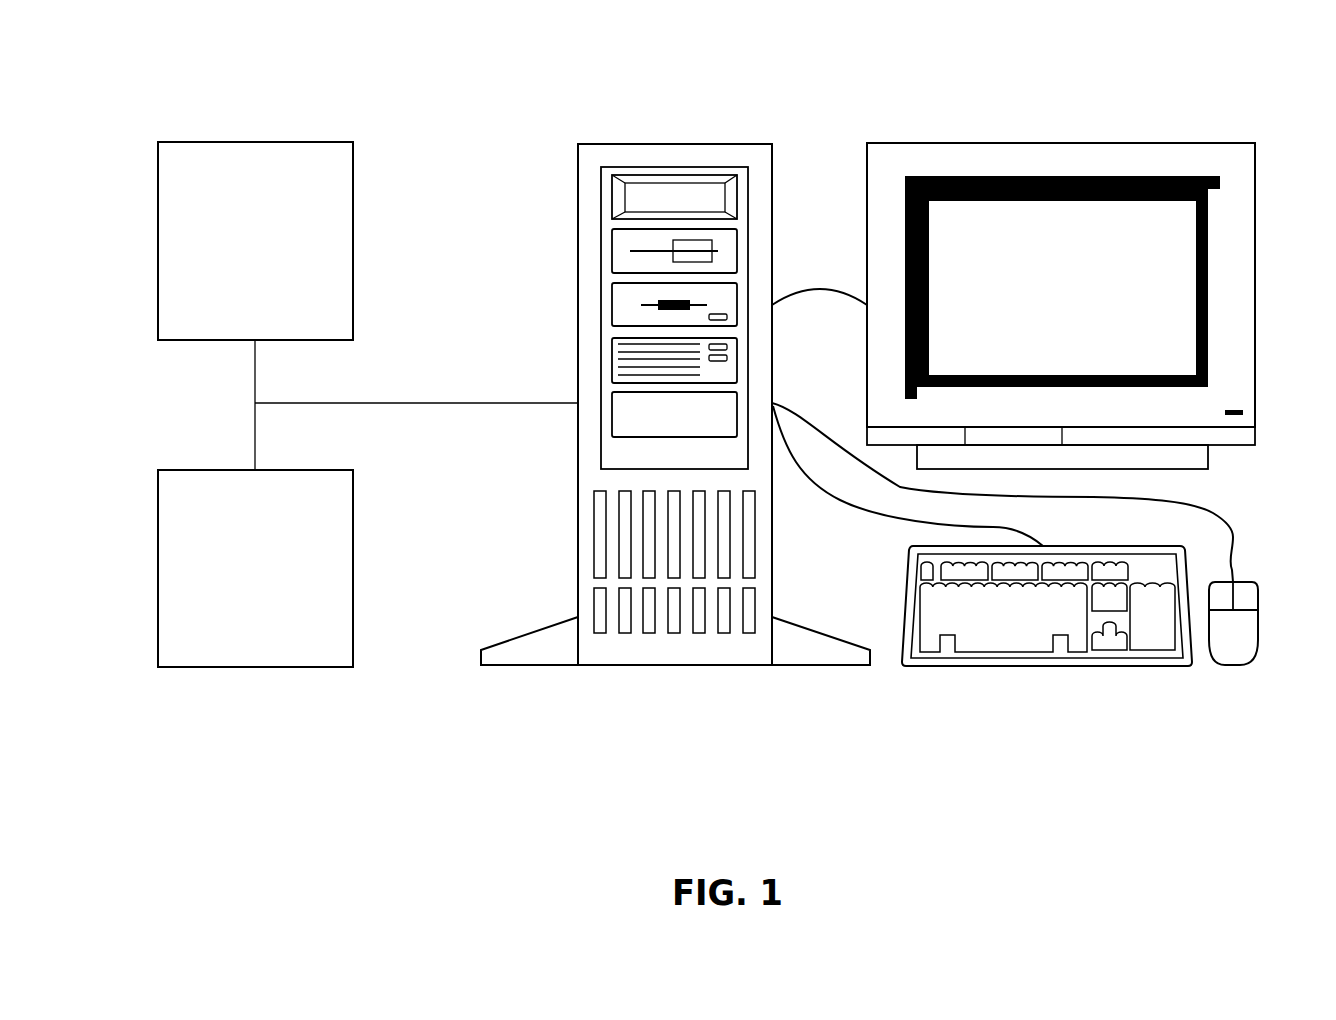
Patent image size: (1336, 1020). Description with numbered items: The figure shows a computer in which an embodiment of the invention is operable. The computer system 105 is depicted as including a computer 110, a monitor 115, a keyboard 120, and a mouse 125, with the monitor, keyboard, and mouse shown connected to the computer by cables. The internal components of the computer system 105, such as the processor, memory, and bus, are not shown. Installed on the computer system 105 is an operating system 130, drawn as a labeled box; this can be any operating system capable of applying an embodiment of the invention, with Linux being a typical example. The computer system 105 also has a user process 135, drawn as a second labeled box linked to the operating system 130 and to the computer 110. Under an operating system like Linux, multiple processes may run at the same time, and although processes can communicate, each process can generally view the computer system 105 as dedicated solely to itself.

The computer system 105 is at (402, 60).
The computer 110 is at (628, 143).
The monitor 115 is at (920, 143).
The keyboard 120 is at (950, 666).
The mouse 125 is at (1233, 665).
The operating system 130 is at (210, 143).
The user process 135 is at (210, 470).